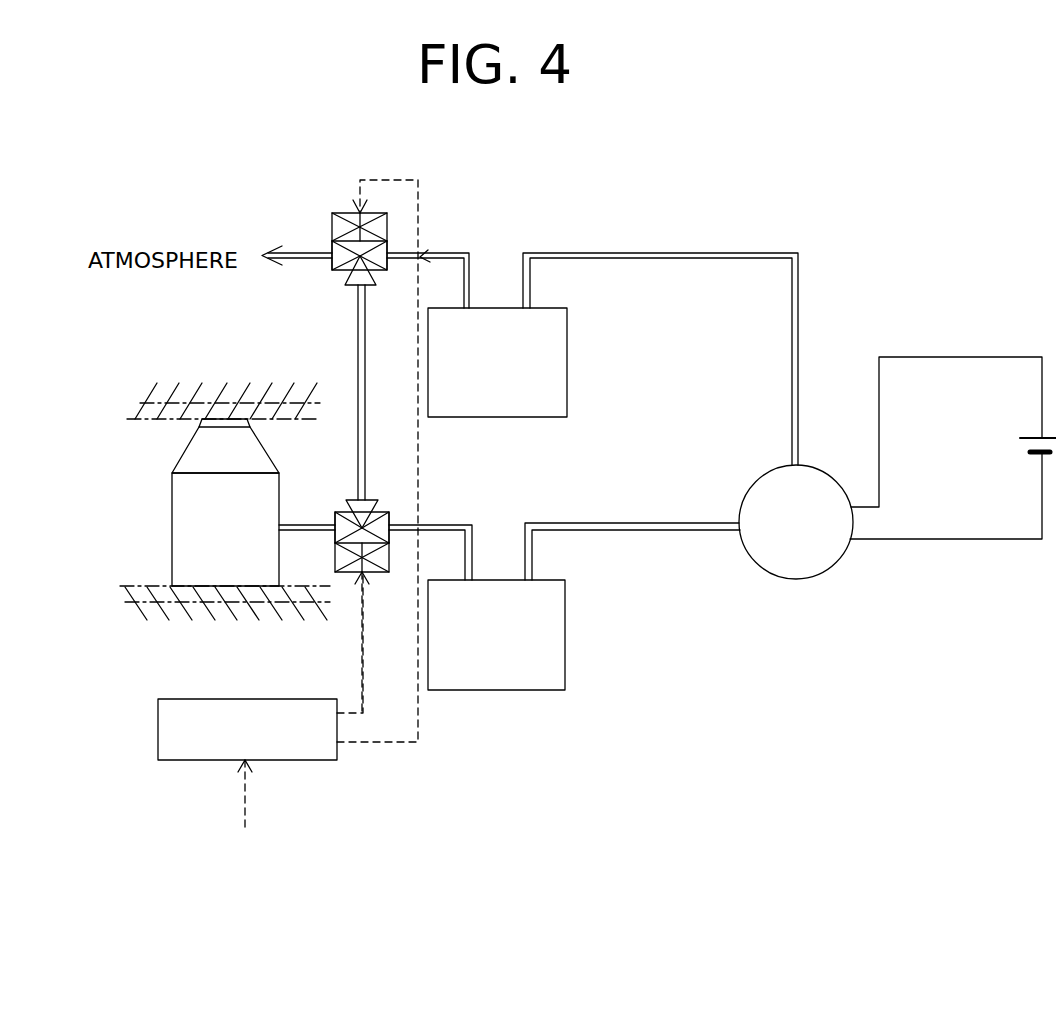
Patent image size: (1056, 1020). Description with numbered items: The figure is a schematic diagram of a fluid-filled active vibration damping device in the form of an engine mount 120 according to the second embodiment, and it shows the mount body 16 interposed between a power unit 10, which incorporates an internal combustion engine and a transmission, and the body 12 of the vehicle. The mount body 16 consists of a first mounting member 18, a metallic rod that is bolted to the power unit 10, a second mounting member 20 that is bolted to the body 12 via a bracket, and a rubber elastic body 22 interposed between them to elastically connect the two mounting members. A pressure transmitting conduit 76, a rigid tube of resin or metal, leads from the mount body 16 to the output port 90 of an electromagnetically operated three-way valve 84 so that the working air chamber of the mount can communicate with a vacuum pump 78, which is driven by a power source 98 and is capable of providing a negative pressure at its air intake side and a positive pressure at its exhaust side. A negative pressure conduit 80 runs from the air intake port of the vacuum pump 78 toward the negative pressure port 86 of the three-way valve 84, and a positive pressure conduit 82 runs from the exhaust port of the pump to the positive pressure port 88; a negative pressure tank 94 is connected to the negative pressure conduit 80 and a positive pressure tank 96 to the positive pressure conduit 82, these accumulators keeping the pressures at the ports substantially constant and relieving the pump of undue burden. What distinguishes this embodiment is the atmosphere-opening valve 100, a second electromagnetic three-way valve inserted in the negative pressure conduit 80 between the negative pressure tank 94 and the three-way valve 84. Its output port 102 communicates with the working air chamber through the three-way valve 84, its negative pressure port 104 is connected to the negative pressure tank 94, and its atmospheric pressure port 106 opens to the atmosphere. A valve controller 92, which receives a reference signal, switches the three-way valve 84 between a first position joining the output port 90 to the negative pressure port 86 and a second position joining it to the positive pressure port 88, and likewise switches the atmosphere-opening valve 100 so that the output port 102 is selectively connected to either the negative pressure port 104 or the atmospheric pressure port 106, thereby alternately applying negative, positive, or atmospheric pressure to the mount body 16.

The power unit 10 is at (150, 412).
The body 12 is at (148, 598).
The mount body 16 is at (177, 445).
The first mounting member 18 is at (226, 424).
The second mounting member 20 is at (185, 535).
The rubber elastic body 22 is at (255, 455).
The pressure transmitting conduit 76 is at (310, 521).
The vacuum pump 78 is at (796, 570).
The negative pressure conduit 80 is at (688, 251).
The positive pressure conduit 82 is at (638, 532).
The three-way valve 84 is at (347, 537).
The negative pressure port 86 is at (355, 505).
The positive pressure port 88 is at (391, 542).
The output port 90 is at (333, 540).
The valve controller 92 is at (327, 748).
The negative pressure tank 94 is at (557, 322).
The positive pressure tank 96 is at (556, 672).
The power source 98 is at (1008, 450).
The atmosphere-opening valve 100 is at (316, 261).
The output port 102 is at (350, 283).
The negative pressure port 104 is at (380, 275).
The atmospheric pressure port 106 is at (333, 265).
The engine mount 120 is at (594, 229).